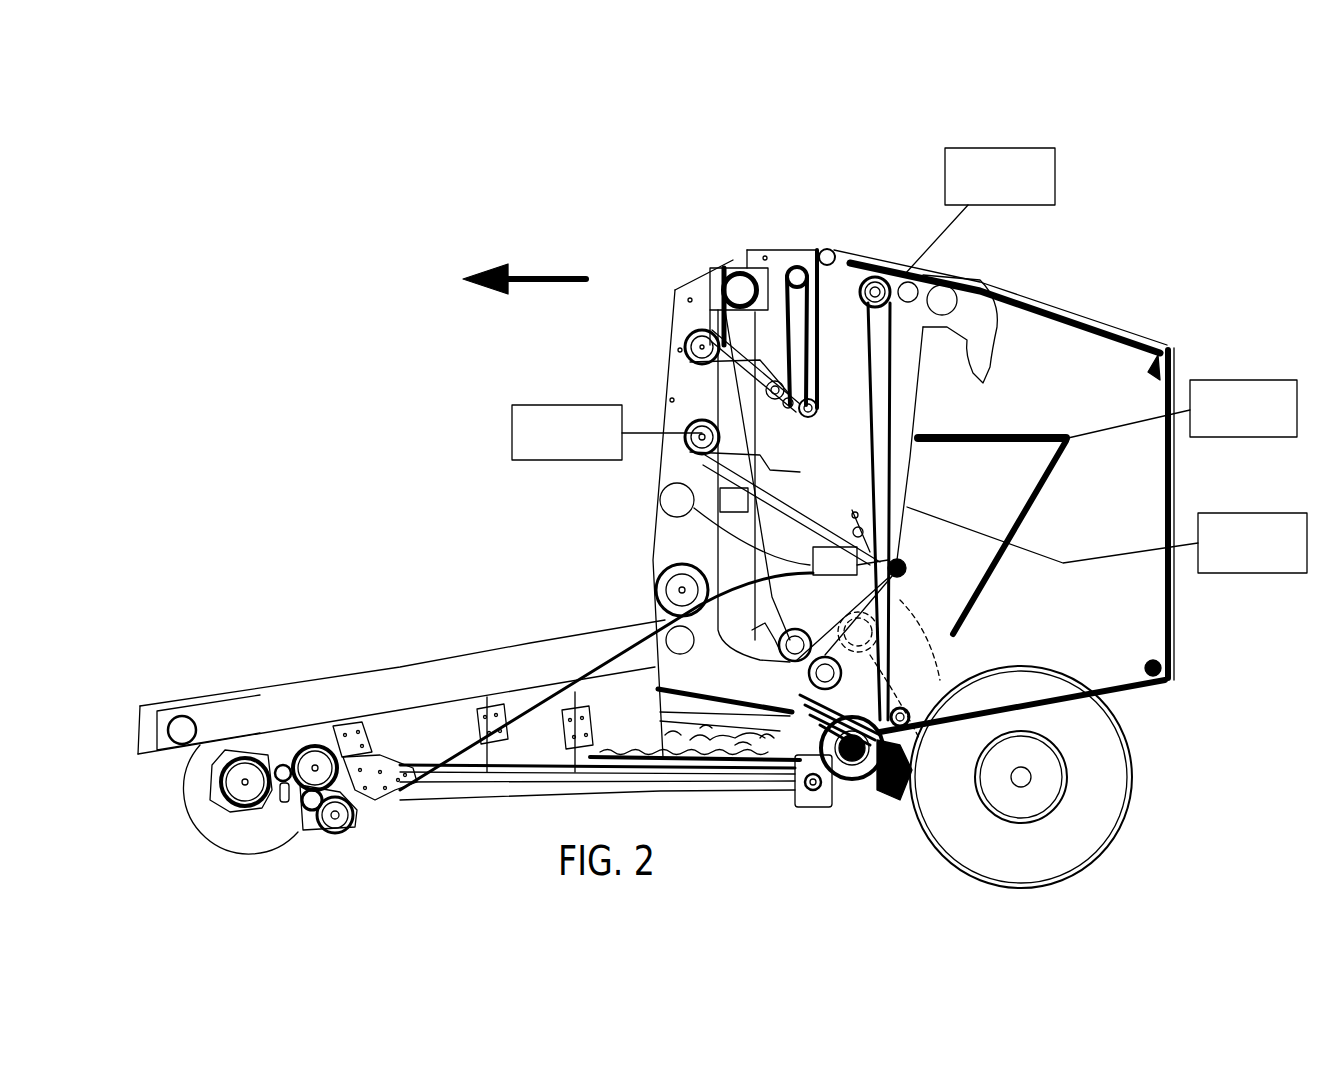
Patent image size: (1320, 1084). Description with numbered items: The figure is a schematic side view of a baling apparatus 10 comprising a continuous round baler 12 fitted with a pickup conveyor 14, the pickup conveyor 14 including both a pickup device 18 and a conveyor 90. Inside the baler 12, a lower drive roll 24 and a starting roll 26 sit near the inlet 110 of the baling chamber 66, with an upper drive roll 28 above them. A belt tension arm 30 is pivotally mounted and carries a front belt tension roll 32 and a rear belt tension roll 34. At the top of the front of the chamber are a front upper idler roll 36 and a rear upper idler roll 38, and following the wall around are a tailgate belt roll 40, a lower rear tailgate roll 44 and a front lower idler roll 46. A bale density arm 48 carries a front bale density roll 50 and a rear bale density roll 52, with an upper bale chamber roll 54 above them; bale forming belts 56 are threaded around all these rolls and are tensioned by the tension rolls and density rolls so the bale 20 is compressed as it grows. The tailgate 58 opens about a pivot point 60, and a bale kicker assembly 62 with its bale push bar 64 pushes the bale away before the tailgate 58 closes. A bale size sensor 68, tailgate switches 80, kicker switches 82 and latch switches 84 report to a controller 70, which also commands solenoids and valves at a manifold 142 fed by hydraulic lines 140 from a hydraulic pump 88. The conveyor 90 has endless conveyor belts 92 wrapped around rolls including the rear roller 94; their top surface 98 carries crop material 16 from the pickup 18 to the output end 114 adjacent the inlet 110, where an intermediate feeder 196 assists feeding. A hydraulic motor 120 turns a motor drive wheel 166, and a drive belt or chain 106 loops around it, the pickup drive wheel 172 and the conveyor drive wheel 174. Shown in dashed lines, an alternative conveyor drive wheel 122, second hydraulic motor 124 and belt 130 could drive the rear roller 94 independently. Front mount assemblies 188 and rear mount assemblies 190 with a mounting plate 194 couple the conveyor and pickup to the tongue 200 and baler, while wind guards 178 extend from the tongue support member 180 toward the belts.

The round baler 10 is at (1163, 249).
The round baler 12 is at (1069, 304).
The pickup conveyor 14 is at (476, 609).
The crop material 16 is at (608, 756).
The pickup device 18 is at (213, 841).
The bale 20 is at (880, 627).
The lower drive roll 24 is at (795, 628).
The starting roll 26 is at (826, 656).
The upper drive roll 28 is at (732, 261).
The belt tension arm 30 is at (692, 330).
The front belt tension roll 32 is at (773, 399).
The rear belt tension roll 34 is at (811, 417).
The front upper idler roll 36 is at (790, 266).
The rear upper idler roll 38 is at (829, 249).
The tailgate belt roll 40 is at (1160, 350).
The lower rear tailgate roll 44 is at (1163, 667).
The front lower idler roll 46 is at (915, 737).
The bale density arm 48 is at (793, 483).
The front bale density roll 50 is at (868, 540).
The rear bale density roll 52 is at (906, 562).
The upper bale chamber roll 54 is at (877, 284).
The bale forming belts 56 is at (764, 537).
The tailgate 58 is at (1135, 695).
The pivot point 60 is at (918, 286).
The bale kicker assembly 62 is at (1010, 435).
The bale push bar 64 is at (1026, 511).
The baling chamber 66 is at (872, 609).
The bale size sensor 68 is at (512, 408).
The controller 70 is at (734, 499).
The tailgate switches 80 is at (1060, 163).
The kicker switches 82 is at (1218, 380).
The latch switches 84 is at (1218, 513).
The hydraulic pump 88 is at (735, 524).
The conveyor 90 is at (473, 802).
The conveyor belts 92 is at (553, 801).
The rear roller 94 is at (805, 778).
The top surface 98 is at (515, 765).
The drive belt or chain 106 is at (300, 820).
The inlet 110 is at (887, 671).
The output end 114 is at (763, 772).
The hydraulic motor 120 is at (352, 822).
The conveyor drive wheel 122 is at (805, 806).
The second hydraulic motor 124 is at (950, 669).
The belt 130 is at (820, 811).
The hydraulic lines 140 is at (620, 652).
The manifold 142 is at (835, 561).
The motor drive wheel 166 is at (332, 822).
The pickup drive wheel 172 is at (224, 780).
The conveyor drive wheel 174 is at (318, 750).
The wind guards 178 is at (440, 725).
The tongue support member 180 is at (327, 688).
The front mount assemblies 188 is at (348, 730).
The rear mount assemblies 190 is at (797, 796).
The mounting plate 194 is at (815, 808).
The intermediate feeder 196 is at (852, 776).
The tongue 200 is at (200, 700).